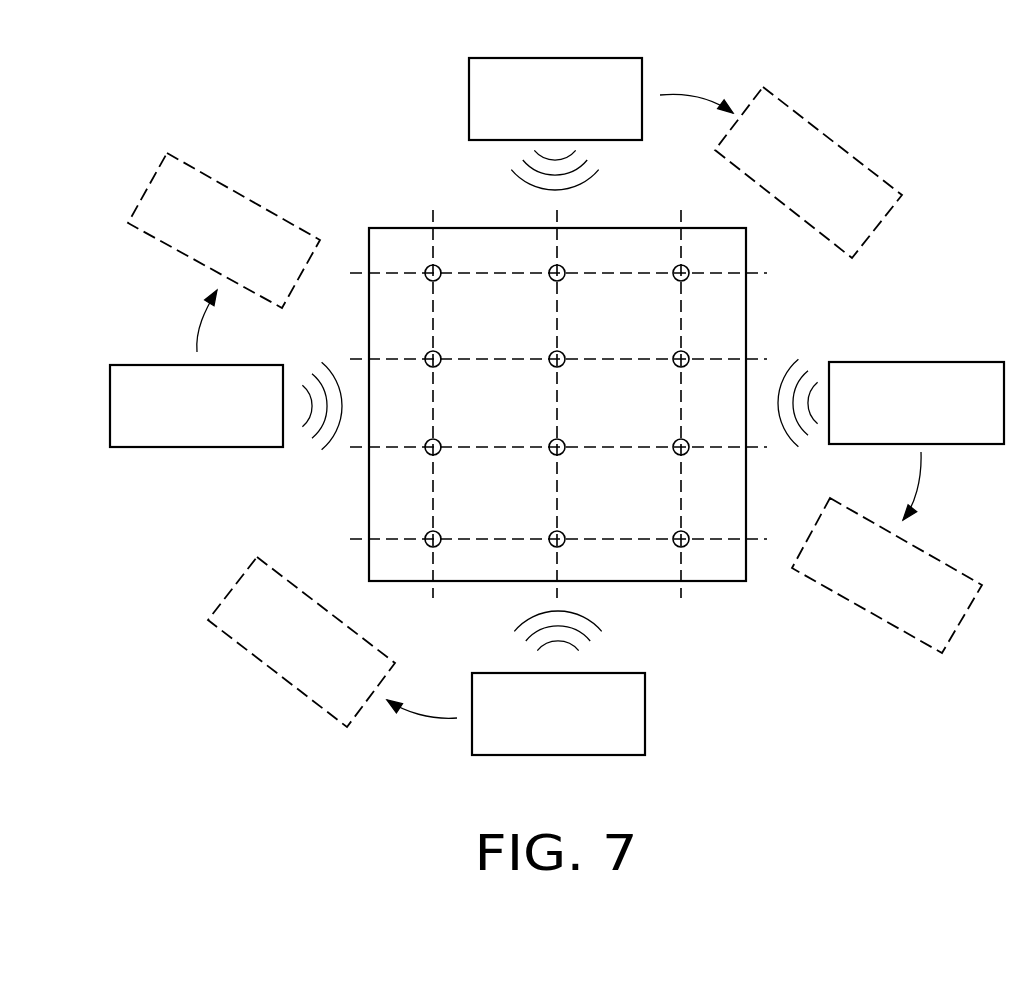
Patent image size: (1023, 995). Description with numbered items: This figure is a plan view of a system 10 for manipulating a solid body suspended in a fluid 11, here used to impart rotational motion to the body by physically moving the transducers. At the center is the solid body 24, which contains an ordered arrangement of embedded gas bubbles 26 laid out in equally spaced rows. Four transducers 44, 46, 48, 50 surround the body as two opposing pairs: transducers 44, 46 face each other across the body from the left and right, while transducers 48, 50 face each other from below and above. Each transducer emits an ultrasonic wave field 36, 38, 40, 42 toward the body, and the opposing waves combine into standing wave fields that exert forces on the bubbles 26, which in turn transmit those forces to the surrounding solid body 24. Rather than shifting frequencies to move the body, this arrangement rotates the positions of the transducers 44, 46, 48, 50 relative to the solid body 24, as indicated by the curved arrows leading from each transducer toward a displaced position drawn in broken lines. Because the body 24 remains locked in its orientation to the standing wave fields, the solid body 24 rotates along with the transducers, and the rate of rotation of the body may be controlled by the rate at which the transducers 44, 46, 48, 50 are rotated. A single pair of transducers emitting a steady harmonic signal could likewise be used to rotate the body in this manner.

The system for manipulating a solid body suspended in a fluid 10 is at (297, 160).
The fluid 11 is at (368, 195).
The solid body 24 is at (724, 583).
The embedded gas bubbles 26 is at (425, 449).
The wave field 36 is at (335, 372).
The wave field 38 is at (779, 442).
The wave field 40 is at (578, 614).
The wave field 42 is at (537, 193).
The transducer 44 is at (148, 365).
The transducer 46 is at (870, 362).
The transducer 48 is at (505, 673).
The transducer 50 is at (543, 58).